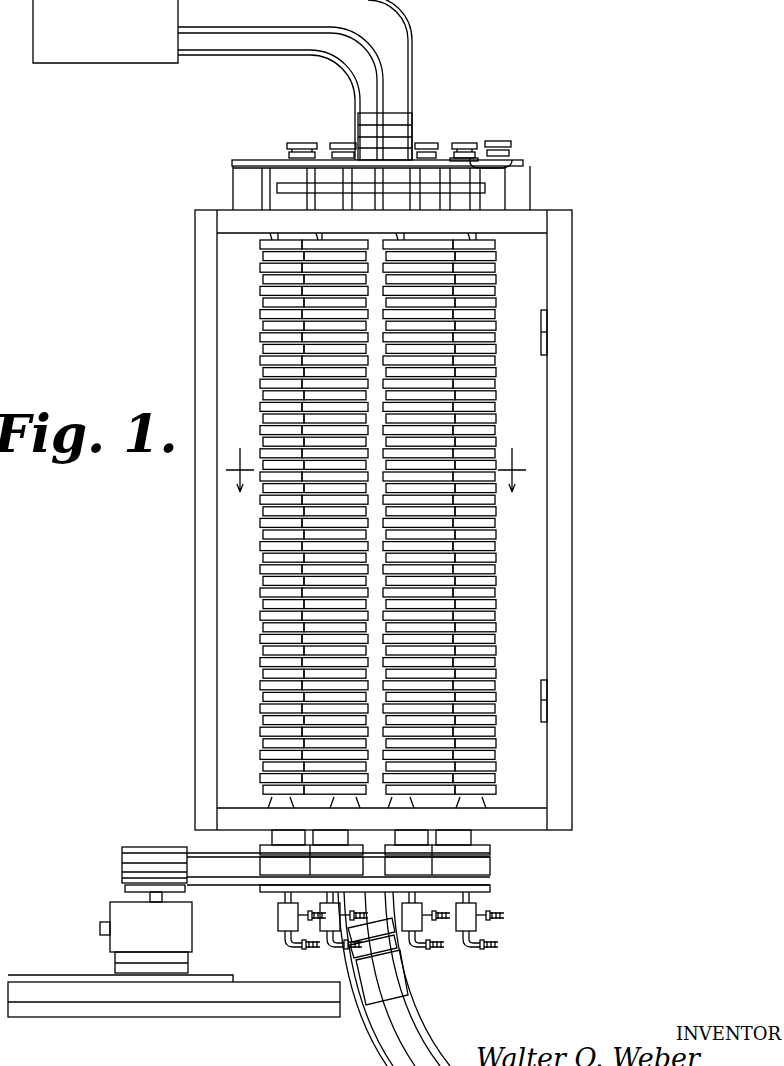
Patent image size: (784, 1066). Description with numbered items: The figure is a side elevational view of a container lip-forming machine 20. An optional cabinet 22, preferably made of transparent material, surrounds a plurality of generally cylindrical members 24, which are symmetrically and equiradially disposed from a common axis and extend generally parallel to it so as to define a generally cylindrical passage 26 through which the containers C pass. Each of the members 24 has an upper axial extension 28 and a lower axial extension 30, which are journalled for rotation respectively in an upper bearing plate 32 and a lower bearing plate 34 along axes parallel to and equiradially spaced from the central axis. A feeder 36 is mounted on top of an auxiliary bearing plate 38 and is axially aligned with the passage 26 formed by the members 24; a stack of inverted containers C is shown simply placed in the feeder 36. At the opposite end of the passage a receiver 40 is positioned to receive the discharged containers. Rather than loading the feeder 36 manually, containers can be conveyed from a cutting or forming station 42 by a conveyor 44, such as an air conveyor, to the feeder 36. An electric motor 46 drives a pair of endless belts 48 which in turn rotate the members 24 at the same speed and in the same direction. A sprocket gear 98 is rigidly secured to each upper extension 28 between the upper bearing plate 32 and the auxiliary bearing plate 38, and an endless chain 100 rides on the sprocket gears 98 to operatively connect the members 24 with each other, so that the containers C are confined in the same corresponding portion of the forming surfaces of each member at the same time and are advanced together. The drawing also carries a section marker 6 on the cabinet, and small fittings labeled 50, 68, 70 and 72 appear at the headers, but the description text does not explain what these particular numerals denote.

The container lip-forming machine 20 is at (415, 520).
The cabinet 22 is at (533, 390).
The generally cylindrical members 24 is at (492, 551).
The generally cylindrical passage 26 is at (381, 203).
The upper axial extension 28 is at (480, 198).
The lower axial extension 30 is at (472, 804).
The upper bearing plate 32 is at (518, 225).
The lower bearing plate 34 is at (476, 825).
The feeder 36 is at (414, 86).
The auxiliary bearing plate 38 is at (536, 163).
The receiver 40 is at (428, 1010).
The cutting or forming station 42 is at (128, 44).
The conveyor 44 is at (222, 58).
The electric motor 46 is at (96, 896).
The endless belts 48 is at (215, 858).
The drain valves 50 is at (391, 920).
The coupling nut 68 is at (452, 152).
The coupling washer 70 is at (472, 143).
The coupling bracket 72 is at (490, 165).
The sprocket gear 98 is at (300, 166).
The endless chain 100 is at (272, 185).
The containers C is at (408, 126).
The section line 6- 6 is at (373, 477).